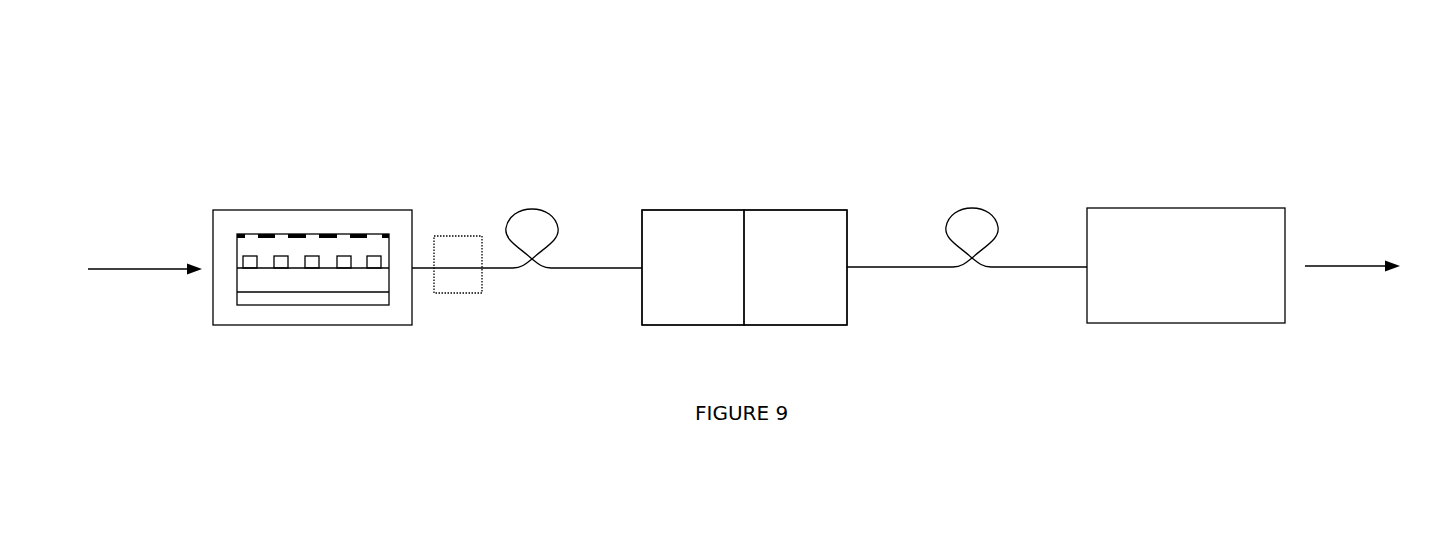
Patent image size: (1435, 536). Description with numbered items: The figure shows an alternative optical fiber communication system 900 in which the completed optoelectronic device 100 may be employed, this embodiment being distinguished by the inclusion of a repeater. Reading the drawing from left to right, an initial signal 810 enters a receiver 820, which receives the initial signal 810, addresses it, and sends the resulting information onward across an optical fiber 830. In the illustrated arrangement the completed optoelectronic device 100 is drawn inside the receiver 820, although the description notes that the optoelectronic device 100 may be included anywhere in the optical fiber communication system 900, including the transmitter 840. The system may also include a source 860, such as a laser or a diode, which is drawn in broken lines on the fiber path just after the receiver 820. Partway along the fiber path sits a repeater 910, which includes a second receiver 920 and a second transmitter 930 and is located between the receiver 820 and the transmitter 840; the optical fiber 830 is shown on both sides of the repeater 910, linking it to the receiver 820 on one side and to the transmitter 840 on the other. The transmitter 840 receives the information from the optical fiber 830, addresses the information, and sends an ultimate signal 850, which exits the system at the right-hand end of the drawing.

The optical fiber communication system 900 is at (218, 78).
The initial signal 810 is at (153, 227).
The receiver 820 is at (312, 223).
The optoelectronic device 100 is at (332, 318).
The source 860 is at (482, 222).
The optical fiber 830 is at (797, 197).
The repeater 910 is at (780, 322).
The second receiver 920 is at (718, 223).
The second transmitter 930 is at (823, 223).
The transmitter 840 is at (1186, 221).
The ultimate signal 850 is at (1359, 225).